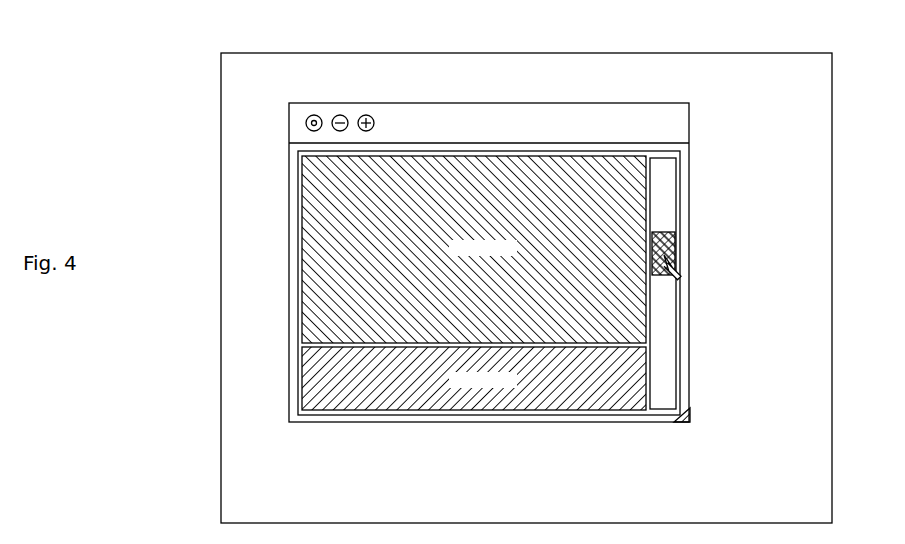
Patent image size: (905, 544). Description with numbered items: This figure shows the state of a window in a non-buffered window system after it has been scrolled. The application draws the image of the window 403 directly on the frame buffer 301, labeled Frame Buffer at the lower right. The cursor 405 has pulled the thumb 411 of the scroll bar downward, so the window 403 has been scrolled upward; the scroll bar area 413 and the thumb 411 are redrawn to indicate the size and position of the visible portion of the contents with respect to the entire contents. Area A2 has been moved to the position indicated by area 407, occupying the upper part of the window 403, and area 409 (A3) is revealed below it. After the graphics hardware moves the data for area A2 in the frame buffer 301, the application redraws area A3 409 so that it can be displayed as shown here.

The frame buffer 301 is at (781, 53).
The window 403 is at (657, 102).
The cursor 405 is at (682, 270).
The area A2 407 is at (588, 153).
The area A3 409 is at (408, 407).
The thumb 411 is at (670, 232).
The scroll bar area 413 is at (674, 352).